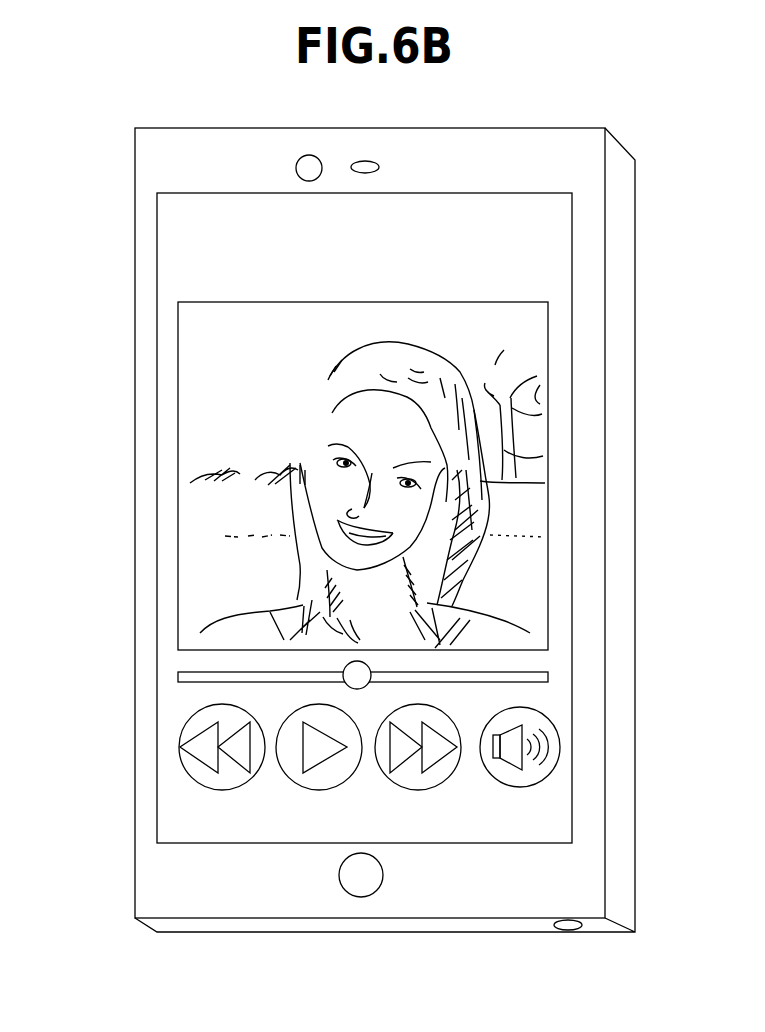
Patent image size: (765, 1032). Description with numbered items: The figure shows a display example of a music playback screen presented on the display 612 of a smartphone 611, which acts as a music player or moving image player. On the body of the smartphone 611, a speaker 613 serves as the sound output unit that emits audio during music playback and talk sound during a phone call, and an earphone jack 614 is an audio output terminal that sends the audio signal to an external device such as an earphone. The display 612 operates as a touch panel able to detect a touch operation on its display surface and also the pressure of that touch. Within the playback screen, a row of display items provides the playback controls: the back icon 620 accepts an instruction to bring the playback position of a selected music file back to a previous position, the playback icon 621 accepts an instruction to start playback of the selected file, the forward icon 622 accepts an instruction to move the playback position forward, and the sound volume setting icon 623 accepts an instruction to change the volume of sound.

The smartphone 611 is at (215, 128).
The display 612 is at (316, 518).
The speaker 613 is at (365, 160).
The earphone jack 614 is at (567, 921).
The back icon 620 is at (222, 790).
The playback icon 621 is at (319, 790).
The forward icon 622 is at (418, 790).
The sound volume setting icon 623 is at (520, 787).